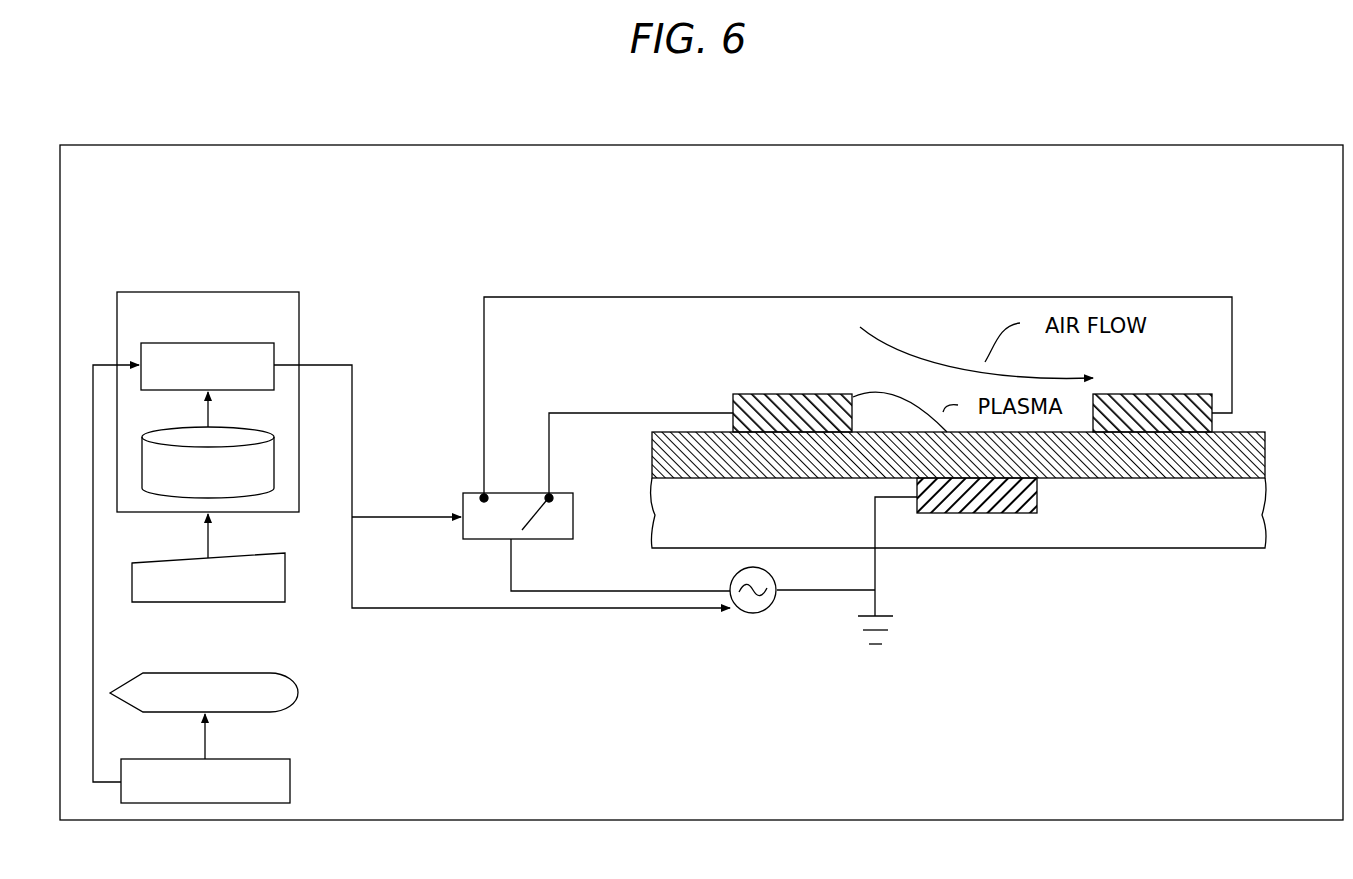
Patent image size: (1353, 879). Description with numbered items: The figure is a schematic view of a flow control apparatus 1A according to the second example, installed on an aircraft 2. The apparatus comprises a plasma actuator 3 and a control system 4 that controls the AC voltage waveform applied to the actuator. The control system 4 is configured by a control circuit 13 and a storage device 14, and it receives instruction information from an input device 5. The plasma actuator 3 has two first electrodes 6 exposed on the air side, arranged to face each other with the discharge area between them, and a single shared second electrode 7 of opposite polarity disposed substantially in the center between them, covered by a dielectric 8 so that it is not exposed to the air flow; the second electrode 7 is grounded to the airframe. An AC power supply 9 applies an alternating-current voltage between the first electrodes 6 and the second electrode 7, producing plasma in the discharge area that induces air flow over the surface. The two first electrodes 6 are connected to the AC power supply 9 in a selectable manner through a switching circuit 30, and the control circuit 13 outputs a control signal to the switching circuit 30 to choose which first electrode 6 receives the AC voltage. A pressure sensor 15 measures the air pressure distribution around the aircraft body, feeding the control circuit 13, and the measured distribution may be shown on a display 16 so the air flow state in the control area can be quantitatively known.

The aircraft 2 is at (768, 145).
The flow control apparatus 1A is at (228, 237).
The plasma actuator 3 is at (407, 283).
The control system 4 is at (220, 283).
The input device 5 is at (217, 602).
The first electrode 6 is at (785, 394).
The second electrode 7 is at (978, 513).
The dielectric 8 is at (1260, 455).
The AC power supply 9 is at (763, 613).
The control circuit 13 is at (195, 390).
The storage device 14 is at (226, 427).
The pressure sensor 15 is at (247, 759).
The display 16 is at (298, 690).
The switching circuit 30 is at (470, 493).